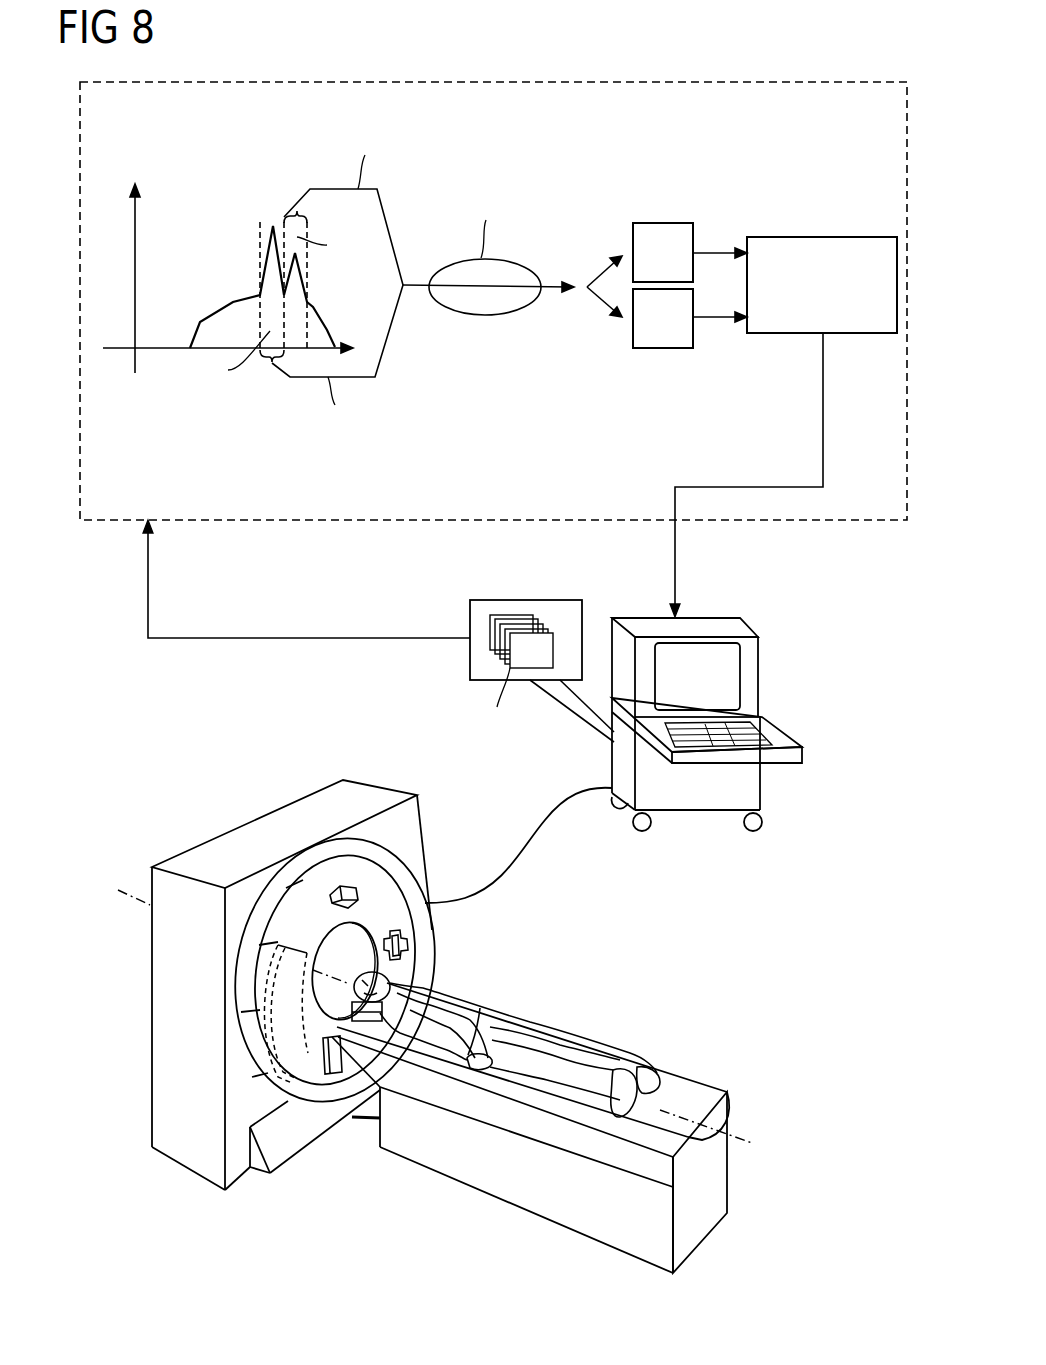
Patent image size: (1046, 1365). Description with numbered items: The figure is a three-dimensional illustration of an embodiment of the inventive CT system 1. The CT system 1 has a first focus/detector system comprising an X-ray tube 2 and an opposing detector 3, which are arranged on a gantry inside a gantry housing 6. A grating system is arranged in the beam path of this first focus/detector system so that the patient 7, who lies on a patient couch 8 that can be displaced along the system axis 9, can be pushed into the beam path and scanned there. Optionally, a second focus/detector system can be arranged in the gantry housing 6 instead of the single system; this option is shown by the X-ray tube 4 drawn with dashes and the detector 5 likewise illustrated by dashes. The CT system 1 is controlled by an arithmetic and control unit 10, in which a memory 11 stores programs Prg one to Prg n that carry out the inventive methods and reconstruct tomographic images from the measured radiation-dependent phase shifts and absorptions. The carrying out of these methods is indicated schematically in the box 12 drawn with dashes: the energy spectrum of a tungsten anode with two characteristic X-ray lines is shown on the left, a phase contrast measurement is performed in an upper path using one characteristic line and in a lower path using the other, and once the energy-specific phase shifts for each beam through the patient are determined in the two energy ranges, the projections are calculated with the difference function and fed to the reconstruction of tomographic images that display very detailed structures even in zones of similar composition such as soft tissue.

The CT system 1 is at (208, 1218).
The X-ray tube 2 is at (357, 888).
The detector 3 is at (330, 1060).
The X-ray tube 4 is at (407, 941).
The detector 5 is at (292, 1060).
The gantry housing 6 is at (158, 1102).
The patient 7 is at (460, 1012).
The patient couch 8 is at (565, 1224).
The system axis 9 is at (735, 1130).
The arithmetic and control unit 10 is at (763, 692).
The memory 11 is at (470, 615).
The box 12 is at (398, 82).